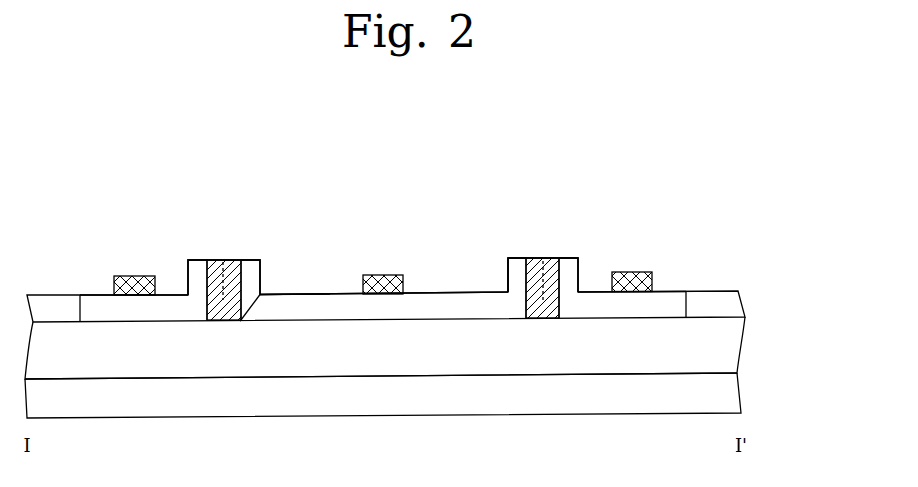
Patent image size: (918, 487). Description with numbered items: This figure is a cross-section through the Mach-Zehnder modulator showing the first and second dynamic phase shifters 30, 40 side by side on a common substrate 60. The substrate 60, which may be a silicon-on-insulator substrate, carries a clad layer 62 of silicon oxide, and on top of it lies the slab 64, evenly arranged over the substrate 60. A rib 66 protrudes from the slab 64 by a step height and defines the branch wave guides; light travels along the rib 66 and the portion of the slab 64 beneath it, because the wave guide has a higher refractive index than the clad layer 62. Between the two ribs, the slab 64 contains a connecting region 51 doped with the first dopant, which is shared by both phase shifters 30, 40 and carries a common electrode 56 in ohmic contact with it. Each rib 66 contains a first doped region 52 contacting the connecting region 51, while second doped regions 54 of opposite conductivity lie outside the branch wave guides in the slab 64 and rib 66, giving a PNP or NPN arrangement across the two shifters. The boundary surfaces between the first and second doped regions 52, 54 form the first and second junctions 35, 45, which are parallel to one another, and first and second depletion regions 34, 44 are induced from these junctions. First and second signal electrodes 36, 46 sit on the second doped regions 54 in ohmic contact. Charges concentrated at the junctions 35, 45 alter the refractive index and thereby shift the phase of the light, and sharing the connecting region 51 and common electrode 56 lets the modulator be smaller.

The first dynamic phase shifter 30 is at (295, 203).
The first depletion region 34 is at (212, 263).
The first junction 35 is at (236, 263).
The first signal electrode 36 is at (136, 283).
The second dynamic phase shifter 40 is at (472, 202).
The second depletion region 44 is at (548, 263).
The second junction 45 is at (533, 263).
The second signal electrode 46 is at (630, 278).
The connecting region 51 is at (333, 300).
The first doped region 52 is at (250, 263).
The second doped region 54 is at (98, 302).
The common electrode 56 is at (386, 282).
The substrate 60 is at (730, 393).
The clad layer 62 is at (733, 347).
The slab 64 is at (730, 303).
The rib 66 is at (501, 266).